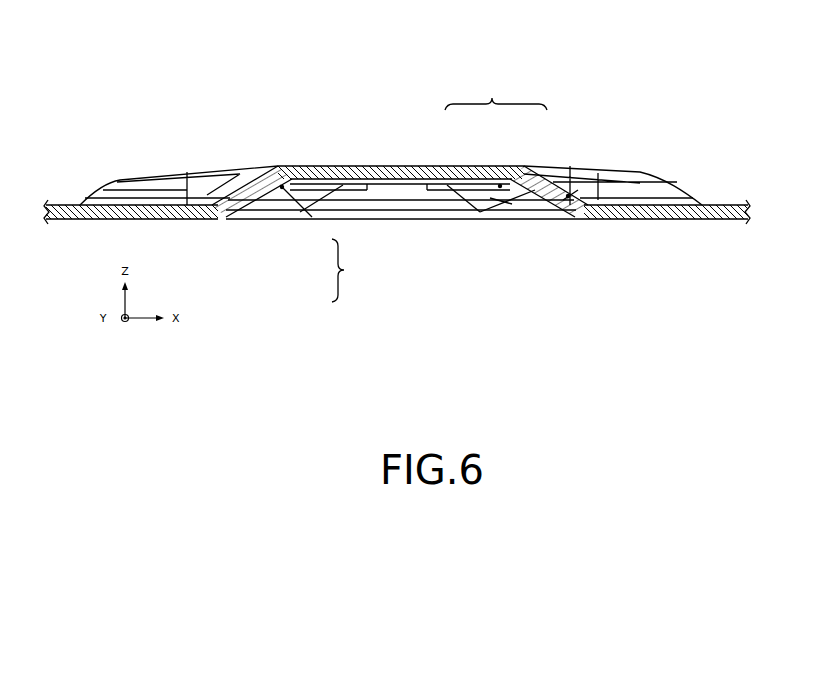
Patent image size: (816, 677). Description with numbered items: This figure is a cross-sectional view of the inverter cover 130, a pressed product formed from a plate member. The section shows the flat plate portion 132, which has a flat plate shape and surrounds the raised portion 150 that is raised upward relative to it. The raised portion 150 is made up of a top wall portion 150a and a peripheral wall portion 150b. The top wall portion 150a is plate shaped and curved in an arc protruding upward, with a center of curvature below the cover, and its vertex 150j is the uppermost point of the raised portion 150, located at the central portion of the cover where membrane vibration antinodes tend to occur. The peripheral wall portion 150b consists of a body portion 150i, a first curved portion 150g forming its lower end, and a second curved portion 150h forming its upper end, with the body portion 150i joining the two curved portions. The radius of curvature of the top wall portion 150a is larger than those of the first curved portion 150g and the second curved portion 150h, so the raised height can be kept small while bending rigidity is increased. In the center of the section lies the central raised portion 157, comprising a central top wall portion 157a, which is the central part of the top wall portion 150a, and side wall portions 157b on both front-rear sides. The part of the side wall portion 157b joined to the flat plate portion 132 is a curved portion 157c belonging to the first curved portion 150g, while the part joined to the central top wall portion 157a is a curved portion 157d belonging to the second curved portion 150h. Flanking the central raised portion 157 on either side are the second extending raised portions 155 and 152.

The inverter cover 130 is at (609, 88).
The flat plate portion 132 is at (640, 221).
The raised portion 150 is at (611, 156).
The top wall portion 150a is at (342, 158).
The peripheral wall portion 150b is at (360, 270).
The first curved portion 150g is at (226, 226).
The second curved portion 150h is at (300, 210).
The body portion 150i is at (258, 212).
The vertex 150j is at (390, 160).
The second extending raised portion 152 is at (633, 188).
The second extending raised portion 155 is at (153, 180).
The central raised portion 157 is at (496, 94).
The central top wall portion 157a is at (443, 164).
The side wall portion 157b is at (533, 165).
The curved portion 157c is at (569, 195).
The curved portion 157d is at (500, 186).